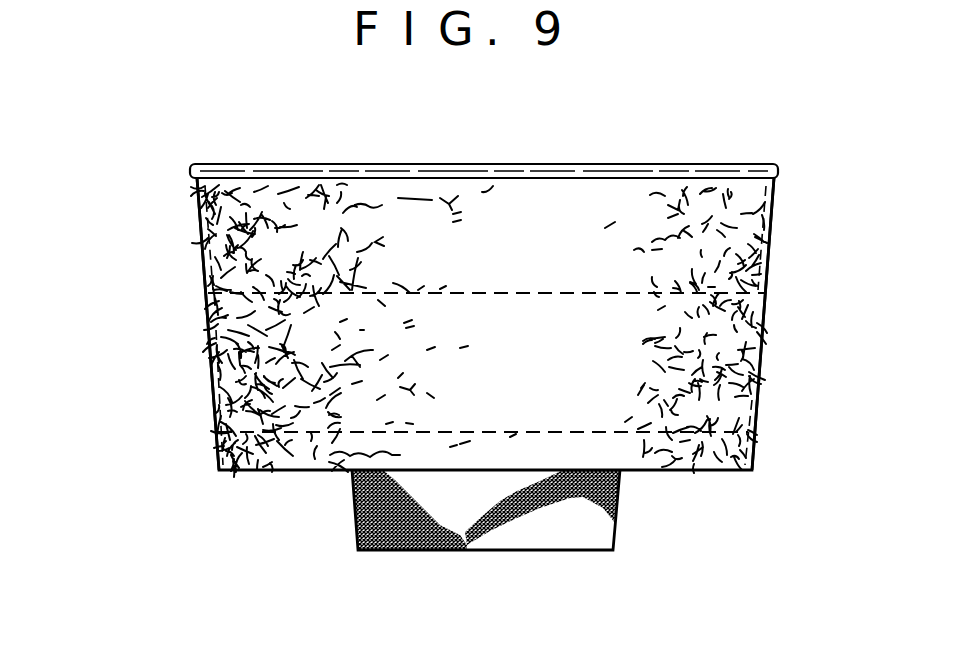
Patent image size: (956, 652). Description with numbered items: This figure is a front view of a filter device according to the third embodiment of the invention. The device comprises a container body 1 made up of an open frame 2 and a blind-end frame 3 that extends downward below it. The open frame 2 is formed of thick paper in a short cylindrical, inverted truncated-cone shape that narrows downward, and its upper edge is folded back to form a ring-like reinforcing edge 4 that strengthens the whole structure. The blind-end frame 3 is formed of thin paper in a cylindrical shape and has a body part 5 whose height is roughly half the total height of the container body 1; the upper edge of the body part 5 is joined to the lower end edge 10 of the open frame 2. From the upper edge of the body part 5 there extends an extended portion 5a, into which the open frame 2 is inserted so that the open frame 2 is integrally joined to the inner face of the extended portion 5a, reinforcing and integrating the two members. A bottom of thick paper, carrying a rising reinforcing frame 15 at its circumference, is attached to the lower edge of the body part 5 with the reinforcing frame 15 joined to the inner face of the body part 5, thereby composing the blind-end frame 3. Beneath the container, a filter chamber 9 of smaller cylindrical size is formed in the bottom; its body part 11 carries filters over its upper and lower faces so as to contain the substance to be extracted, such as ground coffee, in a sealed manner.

The container body 1 is at (186, 242).
The open frame 2 is at (412, 205).
The blind-end frame 3 is at (768, 413).
The ring-like reinforcing edge 4 is at (560, 172).
The body part 5 is at (747, 367).
The extended portion 5a is at (760, 234).
The filter chamber 9 is at (549, 556).
The lower end edge 10 is at (207, 333).
The body part of the filter chamber 11 is at (617, 527).
The rising reinforcing frame 15 is at (213, 427).